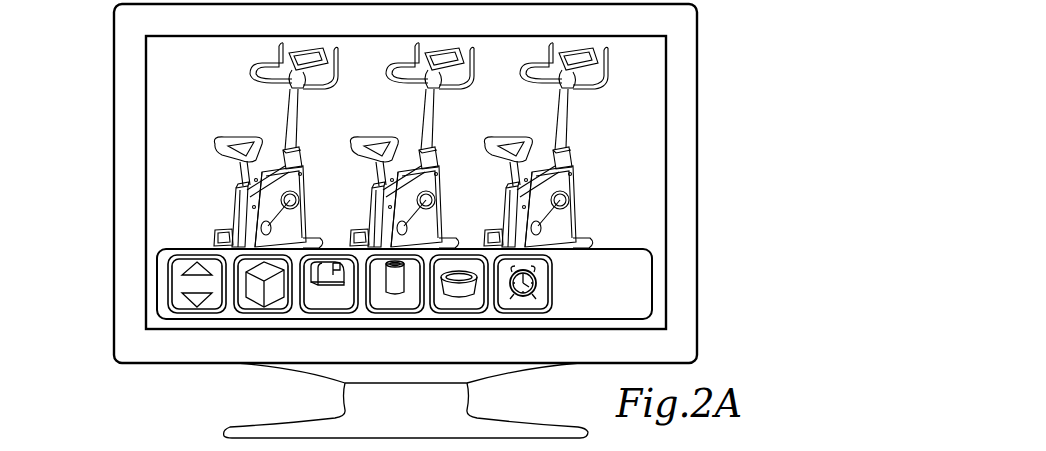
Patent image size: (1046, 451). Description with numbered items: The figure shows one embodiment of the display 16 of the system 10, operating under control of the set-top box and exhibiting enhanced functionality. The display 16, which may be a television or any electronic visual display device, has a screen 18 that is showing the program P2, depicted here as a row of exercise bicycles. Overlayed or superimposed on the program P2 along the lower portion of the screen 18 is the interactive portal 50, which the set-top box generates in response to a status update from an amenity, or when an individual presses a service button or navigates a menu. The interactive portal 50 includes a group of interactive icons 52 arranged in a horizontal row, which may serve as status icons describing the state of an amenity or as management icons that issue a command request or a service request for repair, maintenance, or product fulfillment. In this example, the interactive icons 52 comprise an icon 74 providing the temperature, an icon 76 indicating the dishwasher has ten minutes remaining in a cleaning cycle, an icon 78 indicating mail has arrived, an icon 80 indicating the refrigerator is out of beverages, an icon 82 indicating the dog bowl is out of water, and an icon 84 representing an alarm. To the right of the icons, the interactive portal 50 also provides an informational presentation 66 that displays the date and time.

The system 10 is at (97, 37).
The display 16 is at (698, 186).
The screen 18 is at (162, 136).
The program P2 is at (162, 65).
The interactive portal 50 is at (157, 292).
The interactive icons 52 is at (175, 250).
The icon 74 is at (212, 313).
The icon 76 is at (284, 313).
The icon 78 is at (349, 313).
The icon 80 is at (413, 313).
The icon 82 is at (465, 313).
The icon 84 is at (517, 313).
The informational presentation 66 is at (612, 306).